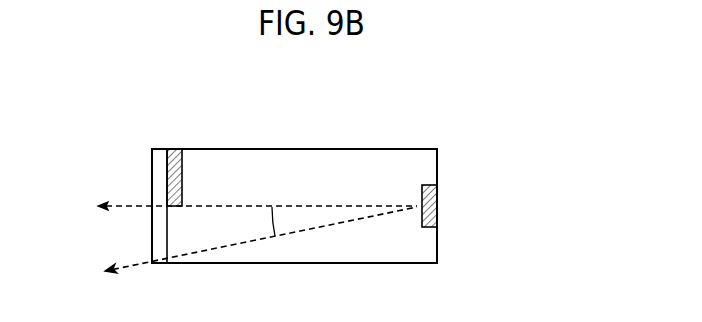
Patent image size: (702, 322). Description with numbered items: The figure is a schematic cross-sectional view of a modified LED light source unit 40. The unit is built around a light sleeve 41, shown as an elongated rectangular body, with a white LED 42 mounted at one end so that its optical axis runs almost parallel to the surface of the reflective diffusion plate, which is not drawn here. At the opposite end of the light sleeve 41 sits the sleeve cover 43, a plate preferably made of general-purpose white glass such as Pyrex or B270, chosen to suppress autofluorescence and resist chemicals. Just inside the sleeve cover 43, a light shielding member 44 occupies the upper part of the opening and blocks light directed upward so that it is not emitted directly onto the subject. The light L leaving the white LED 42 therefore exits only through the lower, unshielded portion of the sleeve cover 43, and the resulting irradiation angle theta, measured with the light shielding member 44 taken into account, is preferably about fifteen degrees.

The LED light source unit 40 is at (477, 163).
The light sleeve 41 is at (347, 148).
The white LED 42 is at (433, 220).
The sleeve cover 43 is at (157, 167).
The light shielding member 44 is at (183, 167).
The light L is at (130, 207).
The irradiation angle theta is at (263, 222).